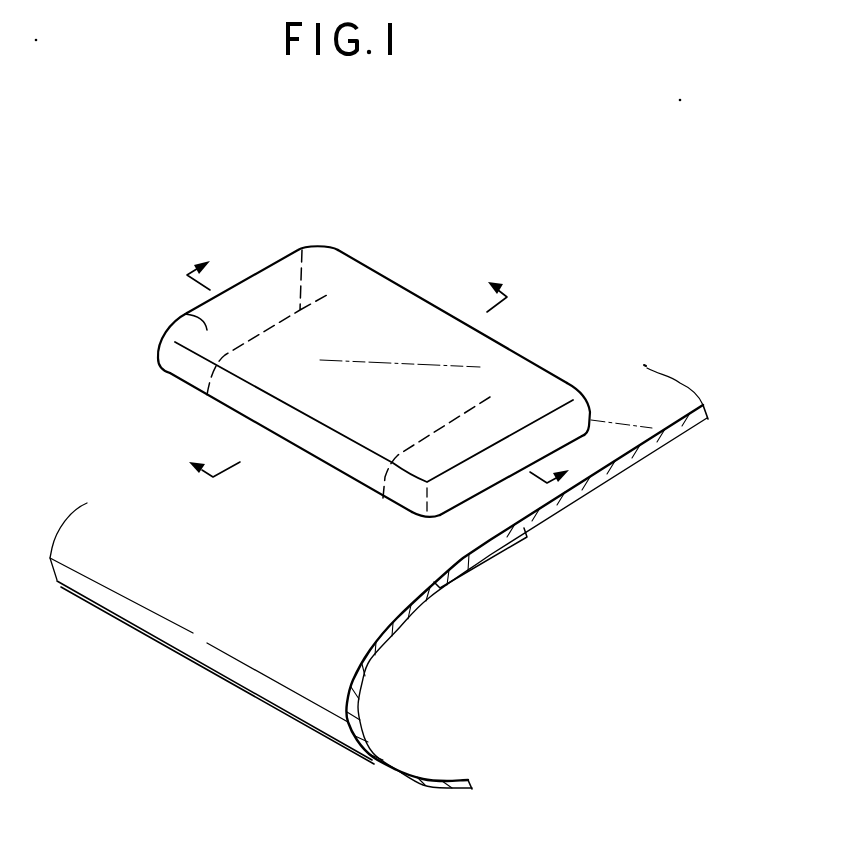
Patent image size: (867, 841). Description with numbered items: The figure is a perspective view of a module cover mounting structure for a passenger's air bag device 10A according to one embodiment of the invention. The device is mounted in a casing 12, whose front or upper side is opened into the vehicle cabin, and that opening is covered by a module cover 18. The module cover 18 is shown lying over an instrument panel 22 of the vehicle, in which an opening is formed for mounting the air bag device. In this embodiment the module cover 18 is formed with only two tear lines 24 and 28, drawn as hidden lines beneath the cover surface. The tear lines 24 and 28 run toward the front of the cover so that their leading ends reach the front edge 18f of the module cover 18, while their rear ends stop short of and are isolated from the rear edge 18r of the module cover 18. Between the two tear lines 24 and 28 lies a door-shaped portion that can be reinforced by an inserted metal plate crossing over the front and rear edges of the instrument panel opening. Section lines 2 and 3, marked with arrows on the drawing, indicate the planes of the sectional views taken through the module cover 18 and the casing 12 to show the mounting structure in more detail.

The passenger's air bag device 10A is at (397, 248).
The module cover 18 is at (185, 314).
The rear edge 18r is at (512, 350).
The front edge 18f is at (322, 455).
The tear line 24 is at (302, 248).
The tear line 28 is at (447, 415).
The casing 12 is at (490, 557).
The instrument panel 22 is at (646, 412).
The section line 2- 2 is at (334, 367).
The section line 3- 3 is at (390, 363).